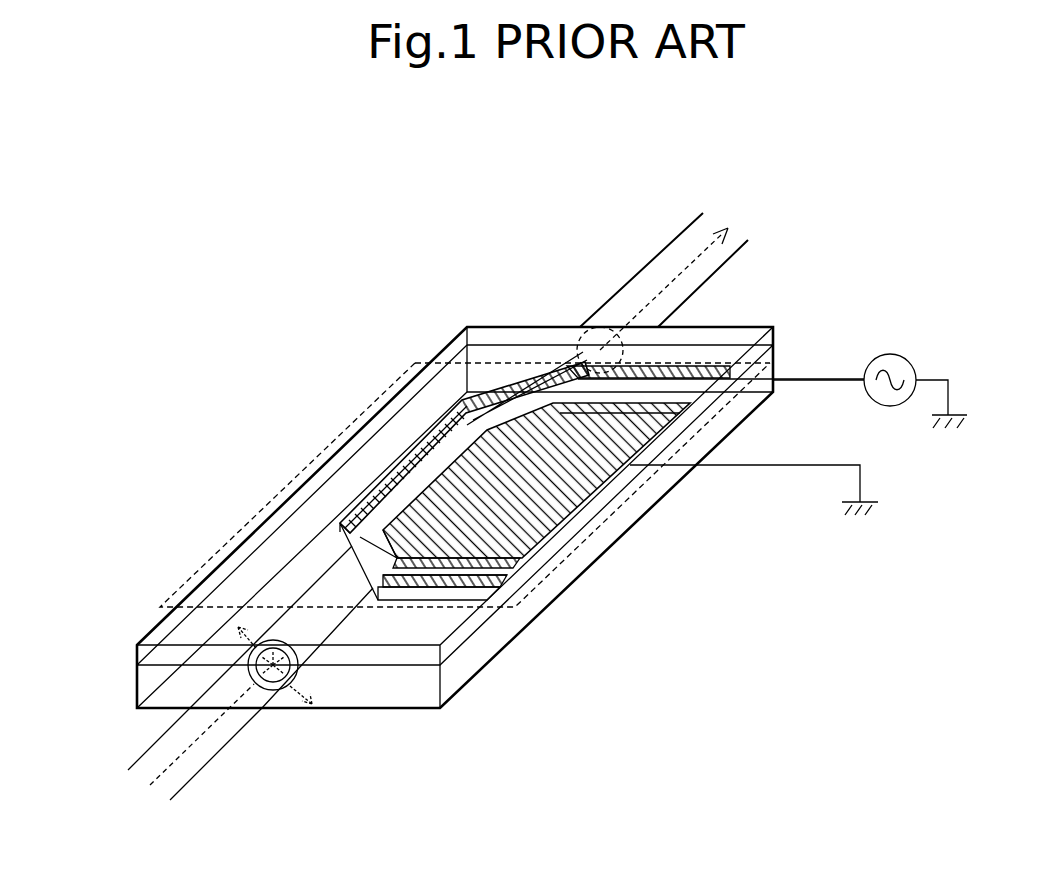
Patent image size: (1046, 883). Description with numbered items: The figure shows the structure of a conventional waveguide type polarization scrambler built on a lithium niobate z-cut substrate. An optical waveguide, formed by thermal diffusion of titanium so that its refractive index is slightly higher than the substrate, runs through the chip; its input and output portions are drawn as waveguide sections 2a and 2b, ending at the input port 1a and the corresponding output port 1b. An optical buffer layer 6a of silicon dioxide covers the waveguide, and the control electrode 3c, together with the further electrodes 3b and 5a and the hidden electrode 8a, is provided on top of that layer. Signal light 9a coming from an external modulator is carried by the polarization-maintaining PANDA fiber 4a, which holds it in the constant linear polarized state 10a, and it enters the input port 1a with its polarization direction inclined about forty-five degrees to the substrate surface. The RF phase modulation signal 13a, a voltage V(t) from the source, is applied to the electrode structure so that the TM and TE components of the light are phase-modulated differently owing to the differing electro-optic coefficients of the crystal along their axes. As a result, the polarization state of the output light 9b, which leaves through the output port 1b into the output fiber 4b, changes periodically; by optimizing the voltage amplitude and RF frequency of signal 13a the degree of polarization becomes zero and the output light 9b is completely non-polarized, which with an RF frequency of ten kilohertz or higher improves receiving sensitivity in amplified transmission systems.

The input port 1a is at (280, 690).
The output optical fiber end face 1b is at (593, 353).
The input optical waveguide 2a is at (307, 617).
The output optical waveguide 2b is at (558, 363).
The strip electrode 3b is at (408, 457).
The control electrode 3c is at (590, 495).
The polarization-maintaining fiber 4a is at (163, 735).
The output optical fiber 4b is at (741, 252).
The signal electrode 5a is at (775, 388).
The optical buffer layer 6a is at (723, 326).
The ground electrode 8a is at (308, 458).
The signal light 9a is at (163, 770).
The output light 9b is at (657, 297).
The linear polarized light 10a is at (227, 637).
The RF phase modulation signal 13a is at (897, 354).